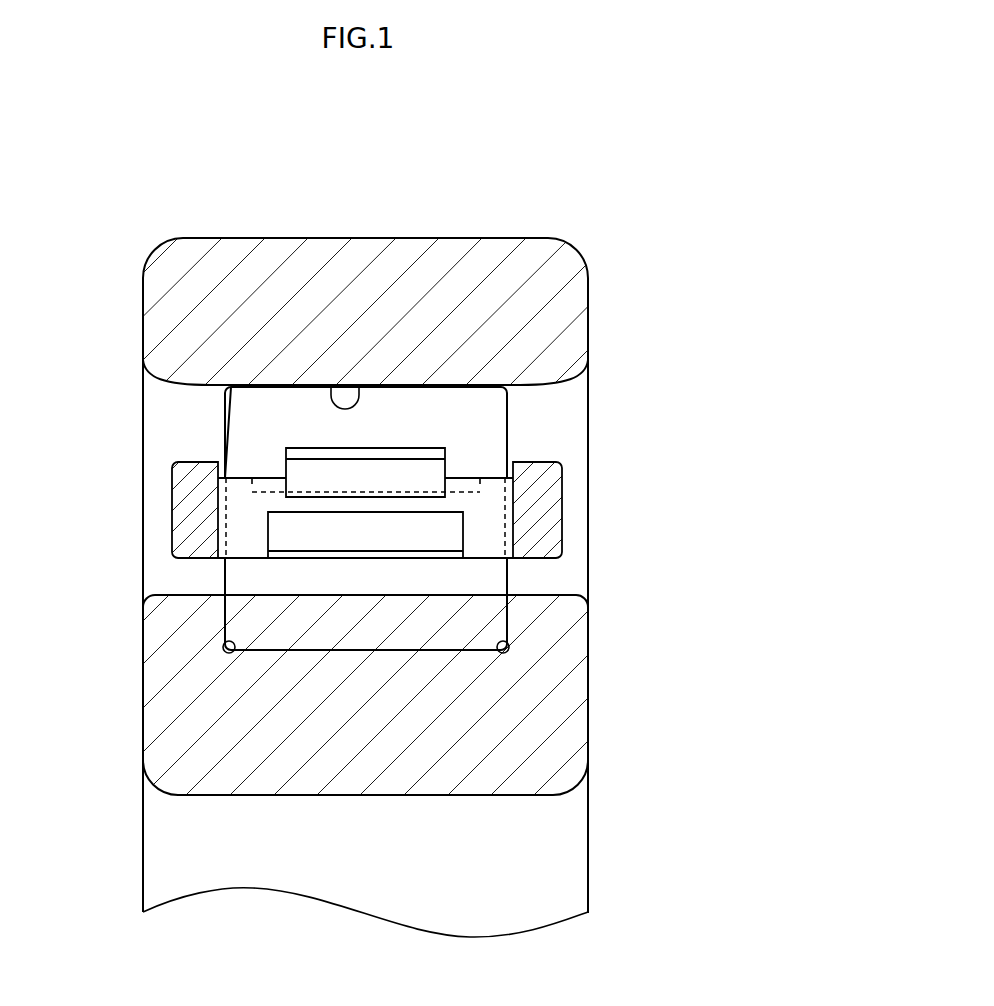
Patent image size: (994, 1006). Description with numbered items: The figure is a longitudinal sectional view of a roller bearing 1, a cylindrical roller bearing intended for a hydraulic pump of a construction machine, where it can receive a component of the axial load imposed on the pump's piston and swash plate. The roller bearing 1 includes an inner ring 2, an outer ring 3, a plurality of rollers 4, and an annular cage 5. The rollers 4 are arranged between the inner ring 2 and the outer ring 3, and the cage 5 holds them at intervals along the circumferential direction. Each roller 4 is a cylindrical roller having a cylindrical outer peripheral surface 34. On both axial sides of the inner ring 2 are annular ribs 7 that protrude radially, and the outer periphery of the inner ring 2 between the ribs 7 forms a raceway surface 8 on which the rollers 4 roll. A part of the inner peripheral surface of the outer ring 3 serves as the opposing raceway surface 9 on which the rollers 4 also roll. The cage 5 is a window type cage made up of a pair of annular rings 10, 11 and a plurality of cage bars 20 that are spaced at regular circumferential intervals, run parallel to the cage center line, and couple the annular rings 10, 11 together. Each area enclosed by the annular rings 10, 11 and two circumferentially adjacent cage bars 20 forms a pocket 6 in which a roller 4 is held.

The roller bearing 1 is at (561, 192).
The inner ring 2 is at (562, 698).
The outer ring 3 is at (562, 316).
The roller 4 is at (258, 580).
The cage 5 is at (577, 523).
The pocket 6 is at (298, 480).
The rib 7 is at (186, 595).
The raceway surface 8 is at (302, 648).
The raceway surface 9 is at (330, 387).
The annular ring 10 is at (188, 508).
The annular ring 11 is at (543, 485).
The cage bar 20 is at (483, 560).
The outer peripheral surface 34 is at (385, 649).